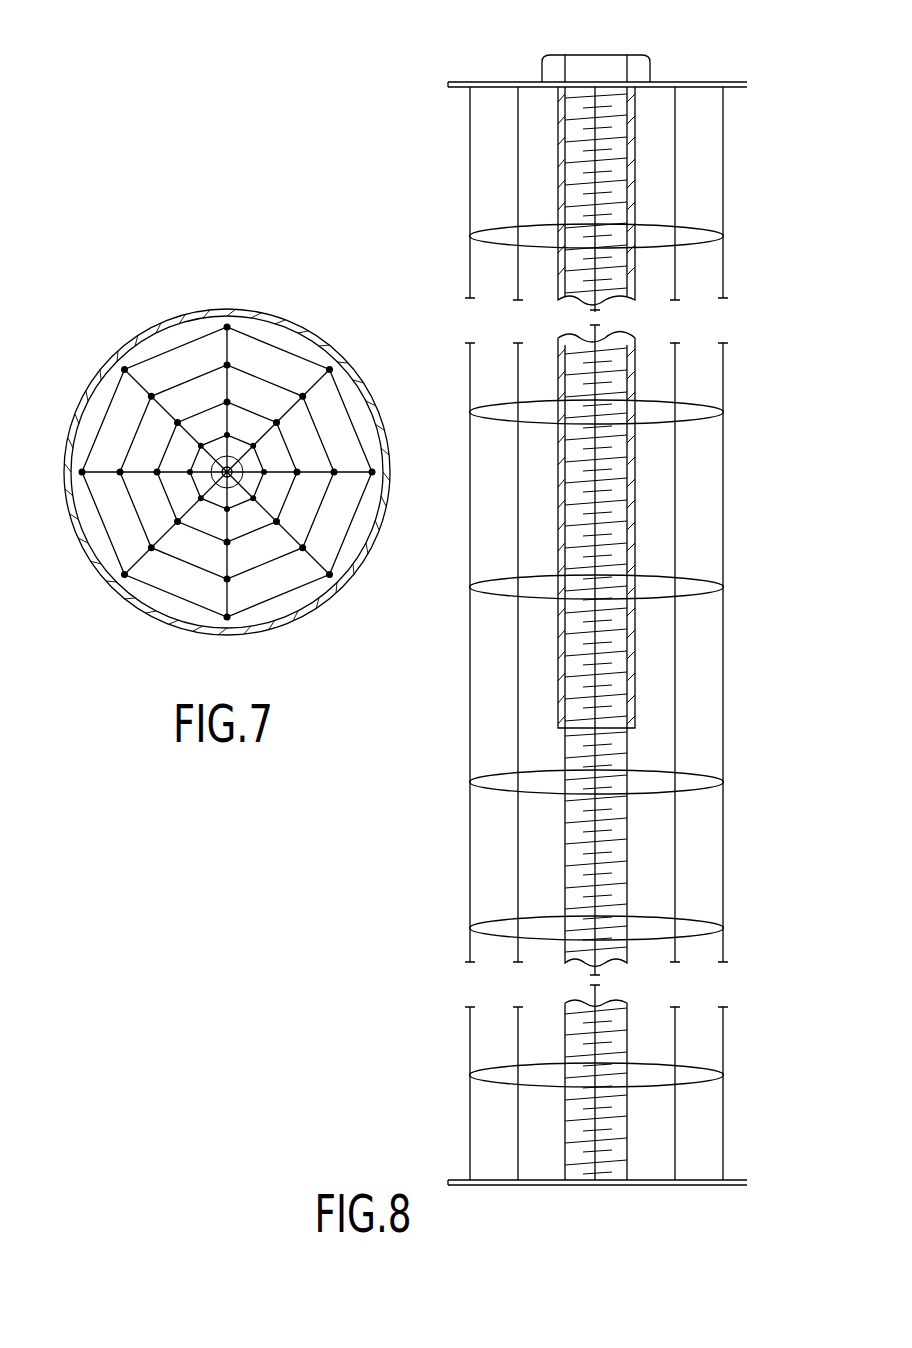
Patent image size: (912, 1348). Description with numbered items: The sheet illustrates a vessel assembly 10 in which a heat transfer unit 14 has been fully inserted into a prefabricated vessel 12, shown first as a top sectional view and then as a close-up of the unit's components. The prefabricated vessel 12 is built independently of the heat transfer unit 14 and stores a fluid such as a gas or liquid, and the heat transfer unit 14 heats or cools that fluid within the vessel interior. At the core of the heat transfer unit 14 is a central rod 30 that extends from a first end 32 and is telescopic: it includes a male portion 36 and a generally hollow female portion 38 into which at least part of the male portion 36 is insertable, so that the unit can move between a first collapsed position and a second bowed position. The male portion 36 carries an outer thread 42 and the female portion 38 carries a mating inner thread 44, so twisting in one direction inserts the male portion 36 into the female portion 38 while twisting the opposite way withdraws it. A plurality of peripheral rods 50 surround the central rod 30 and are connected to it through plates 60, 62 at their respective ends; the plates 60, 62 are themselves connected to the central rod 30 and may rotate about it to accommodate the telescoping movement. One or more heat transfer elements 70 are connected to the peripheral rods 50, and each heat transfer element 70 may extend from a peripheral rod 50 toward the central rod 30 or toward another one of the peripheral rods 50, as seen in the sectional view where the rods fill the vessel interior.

In FIG. 7, the vessel assembly 10 is at (157, 262).
In FIG. 7, the prefabricated vessel 12 is at (132, 337).
In FIG. 7, the heat transfer unit 14 is at (107, 410).
In FIG. 7, the central rod 30 is at (217, 477).
In FIG. 8, the central rod 30 is at (642, 188).
In FIG. 8, the first end 32 is at (633, 82).
In FIG. 8, the male portion 36 is at (555, 851).
In FIG. 8, the female portion 38 is at (552, 640).
In FIG. 8, the outer thread 42 is at (613, 745).
In FIG. 8, the inner thread 44 is at (610, 645).
In FIG. 7, the peripheral rods 50 is at (328, 547).
In FIG. 8, the peripheral rods 50 is at (727, 375).
In FIG. 7, the plate 60 is at (216, 471).
In FIG. 8, the plate 62 is at (748, 84).
In FIG. 7, the heat transfer element 70 is at (193, 567).
In FIG. 8, the heat transfer element 70 is at (493, 248).